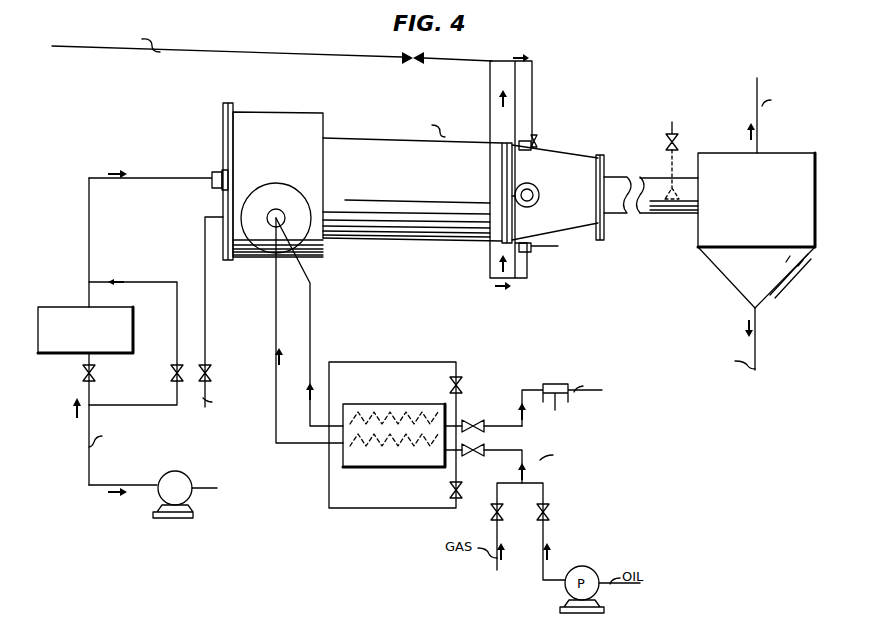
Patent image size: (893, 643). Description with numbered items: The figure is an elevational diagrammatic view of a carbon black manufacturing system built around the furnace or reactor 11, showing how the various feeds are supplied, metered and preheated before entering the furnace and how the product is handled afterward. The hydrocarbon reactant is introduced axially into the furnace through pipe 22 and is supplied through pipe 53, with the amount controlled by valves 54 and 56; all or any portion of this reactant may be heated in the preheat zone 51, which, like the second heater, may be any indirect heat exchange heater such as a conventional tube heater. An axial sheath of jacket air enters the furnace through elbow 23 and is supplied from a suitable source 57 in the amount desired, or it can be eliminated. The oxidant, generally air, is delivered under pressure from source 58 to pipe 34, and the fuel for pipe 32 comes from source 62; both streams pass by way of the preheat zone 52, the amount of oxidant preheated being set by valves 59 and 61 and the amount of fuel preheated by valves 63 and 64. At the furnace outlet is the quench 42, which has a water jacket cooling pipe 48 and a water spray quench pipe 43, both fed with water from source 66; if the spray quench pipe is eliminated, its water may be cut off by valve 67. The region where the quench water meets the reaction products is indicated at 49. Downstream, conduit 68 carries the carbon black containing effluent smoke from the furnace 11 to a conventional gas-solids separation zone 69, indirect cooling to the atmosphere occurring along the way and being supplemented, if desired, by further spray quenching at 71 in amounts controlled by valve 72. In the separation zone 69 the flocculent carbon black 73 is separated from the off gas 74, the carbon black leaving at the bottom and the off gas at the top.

The furnace or reactor 11 is at (457, 126).
The pipe 22 is at (212, 180).
The elbow 23 is at (222, 172).
The pipe 32 is at (276, 314).
The pipe 34 is at (312, 314).
The quench 42 is at (532, 128).
The water spray quench pipe 43 is at (526, 141).
The water jacket cooling pipe 48 is at (517, 98).
The quench zone 49 is at (560, 149).
The preheat zone 51 is at (64, 307).
The preheat zone 52 is at (370, 404).
The pipe 53 is at (90, 485).
The valve 54 is at (92, 373).
The valve 56 is at (172, 373).
The source 57 is at (205, 304).
The source 58 is at (522, 408).
The valve 59 is at (452, 382).
The valve 61 is at (470, 426).
The source 62 is at (491, 450).
The valve 63 is at (474, 455).
The valve 64 is at (458, 493).
The source 66 is at (218, 53).
The valve 67 is at (413, 62).
The conduit 68 is at (672, 222).
The gas-solids separation zone 69 is at (785, 153).
The spray quenching 71 is at (672, 166).
The valve 72 is at (677, 143).
The flocculent carbon black 73 is at (757, 342).
The off gas 74 is at (762, 133).